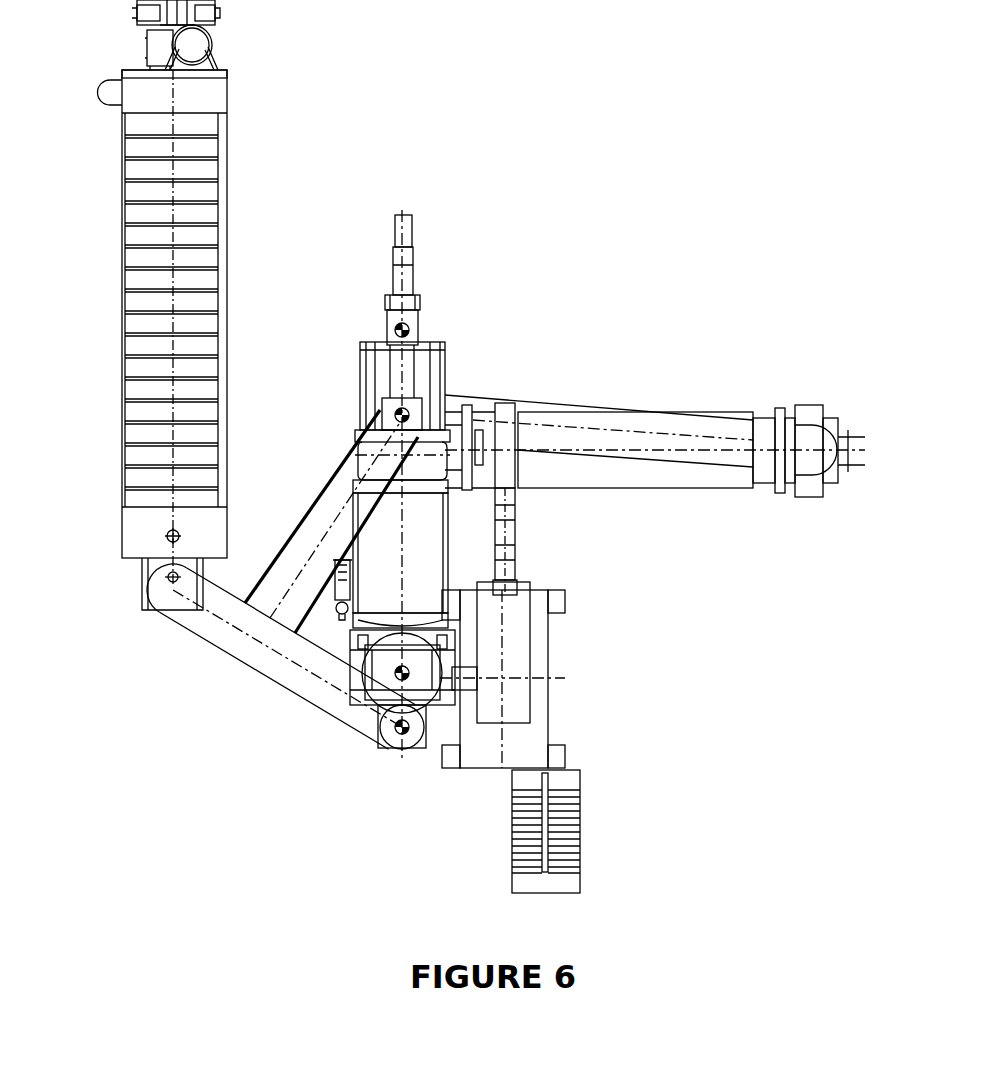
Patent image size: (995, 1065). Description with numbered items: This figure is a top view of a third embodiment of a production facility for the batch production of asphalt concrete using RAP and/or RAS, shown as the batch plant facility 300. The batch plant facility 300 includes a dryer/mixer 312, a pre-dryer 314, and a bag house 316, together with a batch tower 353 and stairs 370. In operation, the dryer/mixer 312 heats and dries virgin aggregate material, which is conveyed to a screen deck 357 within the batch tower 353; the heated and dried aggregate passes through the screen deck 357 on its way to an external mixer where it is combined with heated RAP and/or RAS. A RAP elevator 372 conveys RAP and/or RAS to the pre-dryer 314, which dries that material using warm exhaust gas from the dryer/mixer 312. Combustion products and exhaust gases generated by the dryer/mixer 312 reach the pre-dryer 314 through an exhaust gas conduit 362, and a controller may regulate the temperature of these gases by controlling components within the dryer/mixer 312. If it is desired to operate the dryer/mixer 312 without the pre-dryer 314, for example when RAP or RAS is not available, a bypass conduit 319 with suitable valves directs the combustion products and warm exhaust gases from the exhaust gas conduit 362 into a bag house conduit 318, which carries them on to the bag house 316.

The batch plant facility 300 is at (636, 213).
The dryer/mixer 312 is at (782, 407).
The pre-dryer 314 is at (443, 340).
The bag house 316 is at (122, 257).
The bag house conduit 318 is at (210, 644).
The bypass conduit 319 is at (305, 500).
The batch tower 353 is at (550, 678).
The screen deck 357 is at (515, 540).
The exhaust gas conduit 362 is at (540, 400).
The stairs 370 is at (582, 815).
The RAP elevator 372 is at (413, 268).